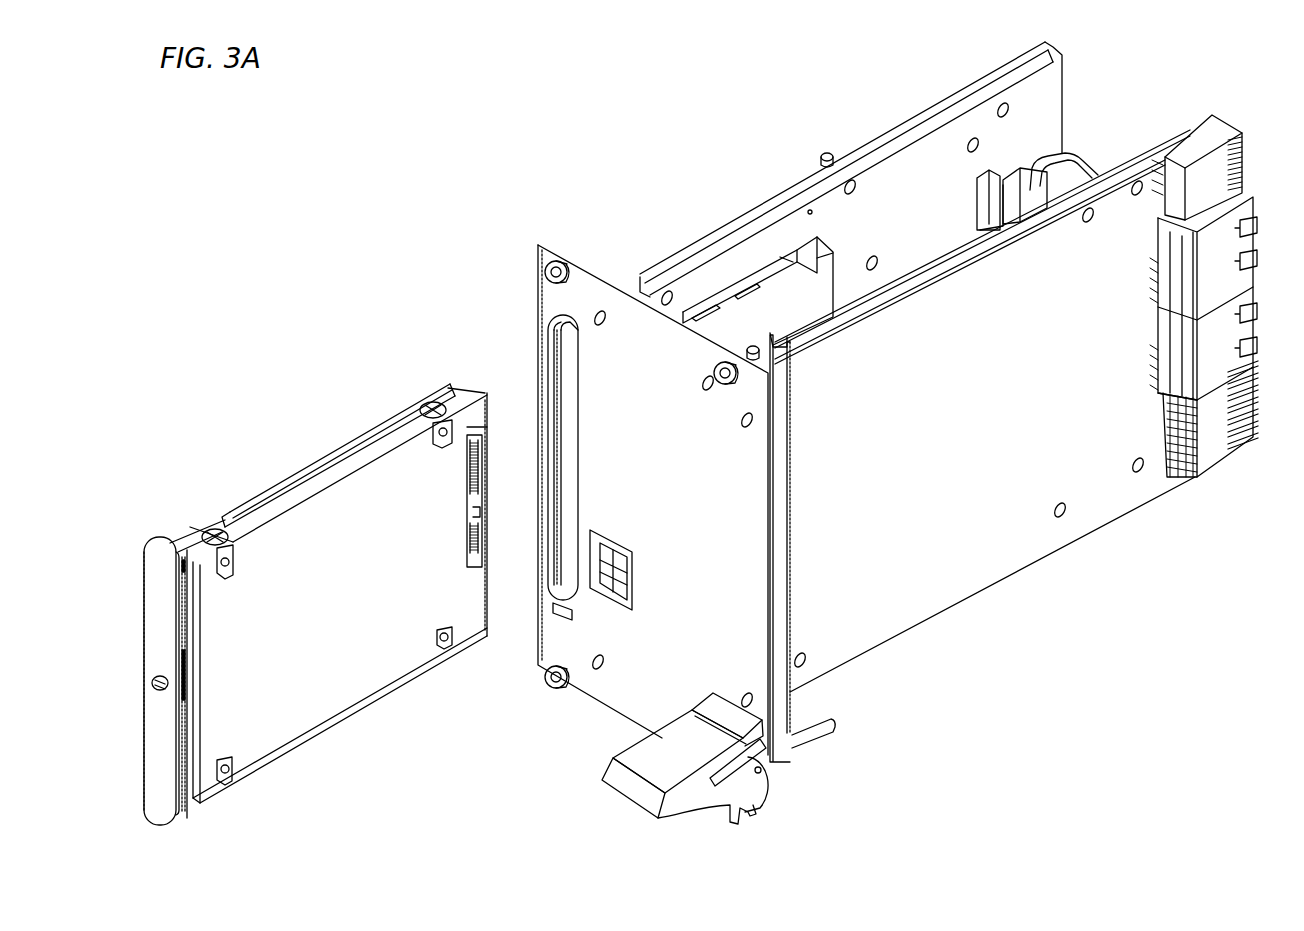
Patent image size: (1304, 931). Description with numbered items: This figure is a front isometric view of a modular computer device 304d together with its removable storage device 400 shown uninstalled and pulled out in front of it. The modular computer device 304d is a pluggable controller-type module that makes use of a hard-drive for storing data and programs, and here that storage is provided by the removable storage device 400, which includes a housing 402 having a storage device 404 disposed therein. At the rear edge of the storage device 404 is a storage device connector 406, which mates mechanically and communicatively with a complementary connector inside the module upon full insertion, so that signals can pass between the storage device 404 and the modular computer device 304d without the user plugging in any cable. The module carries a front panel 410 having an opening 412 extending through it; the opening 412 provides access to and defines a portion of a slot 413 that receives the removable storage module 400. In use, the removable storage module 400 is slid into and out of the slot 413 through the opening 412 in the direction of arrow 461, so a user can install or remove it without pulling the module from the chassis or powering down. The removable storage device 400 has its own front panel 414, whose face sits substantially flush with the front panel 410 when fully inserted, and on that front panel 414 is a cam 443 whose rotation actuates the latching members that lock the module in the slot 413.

The modular computer device 304d is at (520, 222).
The removable storage device 400 is at (253, 448).
The housing 402 is at (335, 447).
The storage device 404 is at (348, 697).
The storage device connector 406 is at (485, 535).
The front panel 410 is at (650, 701).
The opening 412 is at (550, 346).
The slot 413 is at (567, 368).
The front panel 414 is at (155, 605).
The cam 443 is at (152, 692).
The arrow 461 is at (560, 324).